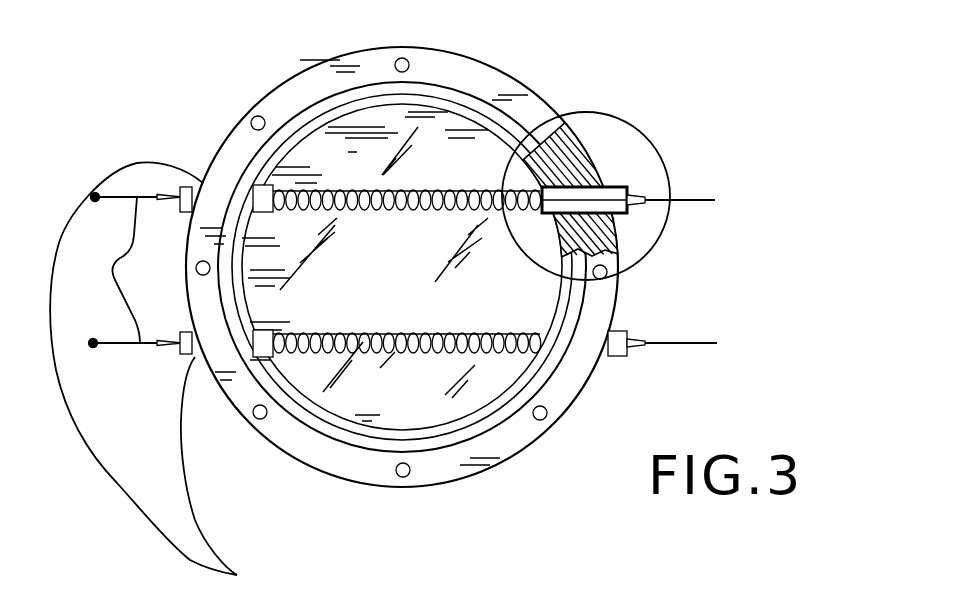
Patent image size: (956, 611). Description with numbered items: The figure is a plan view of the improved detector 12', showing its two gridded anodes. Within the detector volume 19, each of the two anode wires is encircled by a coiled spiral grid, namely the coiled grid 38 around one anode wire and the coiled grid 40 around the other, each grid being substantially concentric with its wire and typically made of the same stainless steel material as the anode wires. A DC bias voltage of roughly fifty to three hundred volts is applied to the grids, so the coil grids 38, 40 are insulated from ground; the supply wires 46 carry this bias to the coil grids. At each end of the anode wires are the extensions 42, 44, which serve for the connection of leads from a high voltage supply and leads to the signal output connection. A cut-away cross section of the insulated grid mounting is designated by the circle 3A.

The improved detector 12' is at (386, 261).
The detector volume 19 is at (410, 279).
The coiled grid 38 is at (468, 186).
The coiled grid 40 is at (473, 352).
The extension 42 is at (677, 343).
The extension 44 is at (133, 270).
The supply wires 46 is at (157, 535).
The circle 3A is at (657, 150).